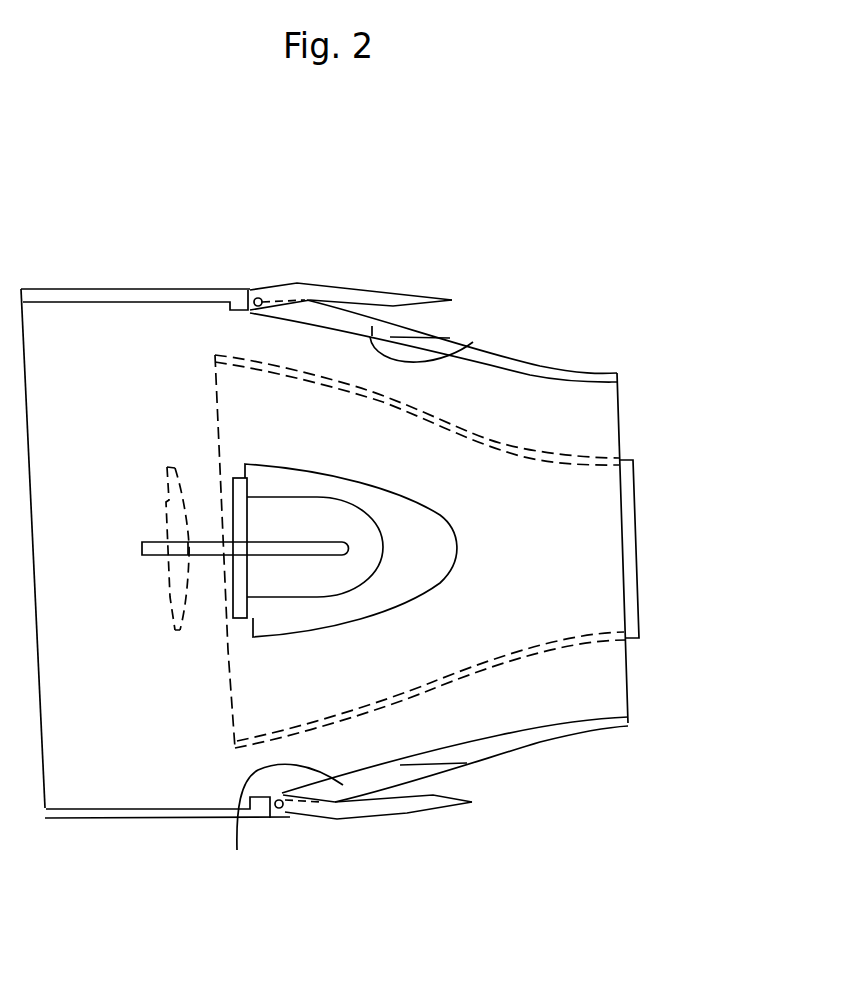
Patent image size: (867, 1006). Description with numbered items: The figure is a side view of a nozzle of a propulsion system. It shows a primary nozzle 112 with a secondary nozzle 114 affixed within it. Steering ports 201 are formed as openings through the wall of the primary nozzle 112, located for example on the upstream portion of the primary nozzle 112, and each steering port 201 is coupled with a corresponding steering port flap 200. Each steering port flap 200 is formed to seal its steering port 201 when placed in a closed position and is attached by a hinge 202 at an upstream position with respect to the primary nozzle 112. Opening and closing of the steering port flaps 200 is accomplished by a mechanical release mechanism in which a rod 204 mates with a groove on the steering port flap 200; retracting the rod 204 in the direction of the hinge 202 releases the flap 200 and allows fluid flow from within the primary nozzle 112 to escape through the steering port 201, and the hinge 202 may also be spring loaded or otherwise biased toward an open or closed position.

The steering port flap 200 is at (350, 285).
The steering port 201 is at (473, 342).
The hinge 202 is at (245, 617).
The rod 204 is at (205, 558).
The primary nozzle 112 is at (553, 730).
The secondary nozzle 114 is at (560, 650).